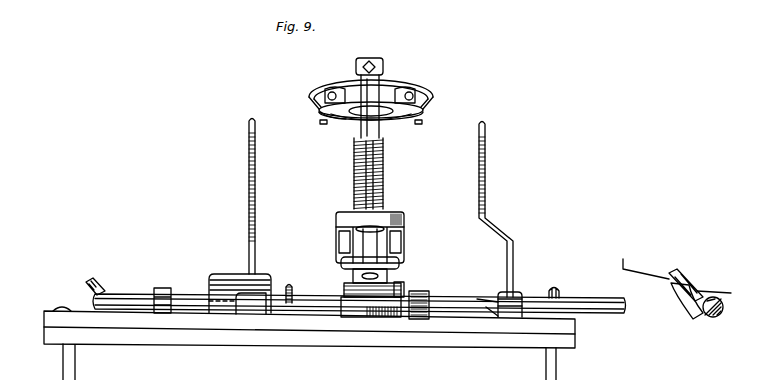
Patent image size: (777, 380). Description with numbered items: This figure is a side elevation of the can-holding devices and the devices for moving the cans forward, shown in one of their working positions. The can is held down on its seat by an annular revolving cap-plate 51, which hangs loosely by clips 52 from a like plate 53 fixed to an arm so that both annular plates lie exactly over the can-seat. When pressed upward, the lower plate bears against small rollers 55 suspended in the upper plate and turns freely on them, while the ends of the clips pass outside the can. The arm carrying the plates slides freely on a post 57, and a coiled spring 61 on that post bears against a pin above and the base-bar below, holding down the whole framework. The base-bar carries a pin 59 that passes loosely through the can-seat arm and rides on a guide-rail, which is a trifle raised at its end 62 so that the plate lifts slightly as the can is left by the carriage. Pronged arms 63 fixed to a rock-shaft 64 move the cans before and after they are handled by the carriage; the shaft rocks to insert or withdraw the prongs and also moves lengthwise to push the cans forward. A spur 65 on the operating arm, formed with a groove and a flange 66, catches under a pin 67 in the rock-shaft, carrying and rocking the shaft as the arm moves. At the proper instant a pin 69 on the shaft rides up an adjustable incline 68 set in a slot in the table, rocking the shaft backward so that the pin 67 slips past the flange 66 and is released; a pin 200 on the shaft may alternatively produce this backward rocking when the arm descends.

The annular revolving cap-plate 51 is at (396, 121).
The clips 52 is at (423, 106).
The plate 53 is at (420, 87).
The rollers 55 is at (333, 86).
The post 57 is at (351, 124).
The pin 59 is at (365, 240).
The coiled spring 61 is at (356, 170).
The end 62 is at (240, 284).
The pronged arms 63 is at (490, 190).
The rock-shaft 64 is at (716, 319).
The spur 65 is at (427, 292).
The flange 66 is at (689, 304).
The pin 67 is at (401, 286).
The incline 68 is at (481, 296).
The pin 69 is at (566, 288).
The pin 200 is at (298, 285).